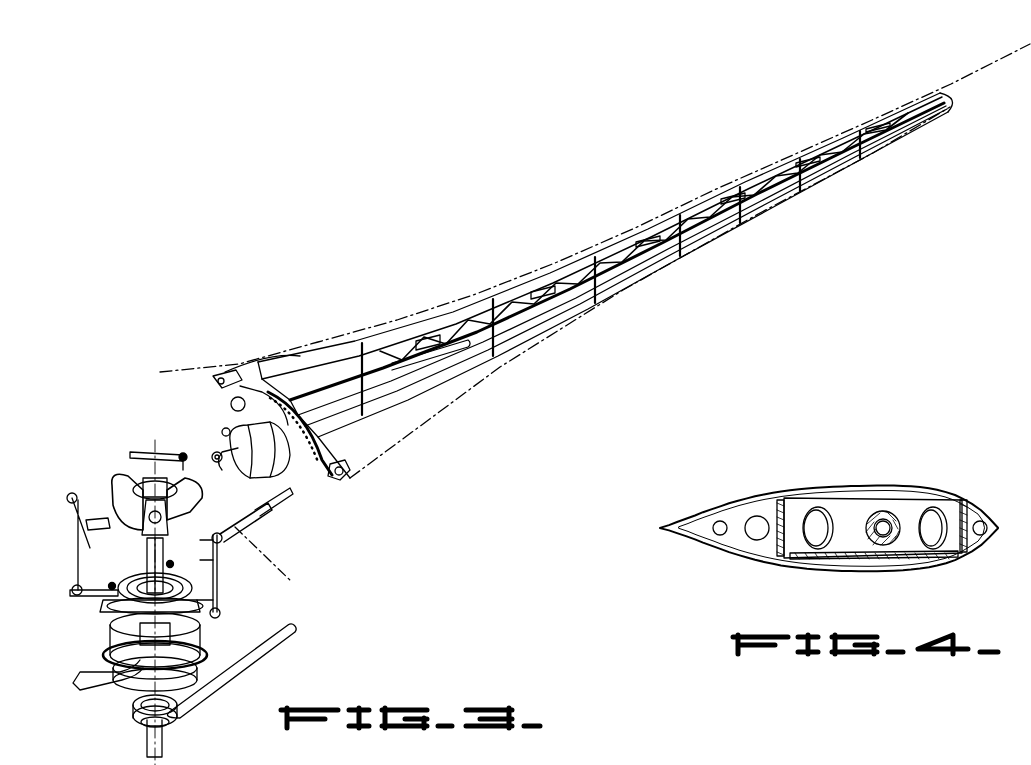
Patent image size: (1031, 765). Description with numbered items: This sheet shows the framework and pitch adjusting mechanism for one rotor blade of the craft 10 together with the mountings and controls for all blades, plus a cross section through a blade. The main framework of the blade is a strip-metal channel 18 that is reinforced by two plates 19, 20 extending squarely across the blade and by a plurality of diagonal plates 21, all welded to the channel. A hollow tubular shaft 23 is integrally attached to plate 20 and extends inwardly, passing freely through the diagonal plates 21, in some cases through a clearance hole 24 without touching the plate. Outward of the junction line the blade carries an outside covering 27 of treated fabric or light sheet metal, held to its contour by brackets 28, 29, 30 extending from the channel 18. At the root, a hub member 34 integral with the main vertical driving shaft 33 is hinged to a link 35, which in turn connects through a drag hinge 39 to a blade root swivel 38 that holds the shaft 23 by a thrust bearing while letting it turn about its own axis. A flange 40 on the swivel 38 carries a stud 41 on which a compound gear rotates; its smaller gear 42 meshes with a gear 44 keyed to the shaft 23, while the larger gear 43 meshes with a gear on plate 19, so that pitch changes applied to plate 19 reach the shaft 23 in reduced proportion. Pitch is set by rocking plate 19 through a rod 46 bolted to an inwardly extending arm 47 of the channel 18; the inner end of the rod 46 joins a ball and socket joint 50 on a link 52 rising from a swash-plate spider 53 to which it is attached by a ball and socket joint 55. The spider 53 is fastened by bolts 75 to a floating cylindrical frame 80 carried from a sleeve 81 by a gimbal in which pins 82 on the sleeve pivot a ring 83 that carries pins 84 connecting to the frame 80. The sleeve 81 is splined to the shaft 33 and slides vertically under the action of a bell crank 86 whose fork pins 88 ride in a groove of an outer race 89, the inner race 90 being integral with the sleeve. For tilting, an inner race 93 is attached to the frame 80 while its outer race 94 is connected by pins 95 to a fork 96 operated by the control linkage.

In FIG. 3, the rotor assembly 10 is at (160, 756).
In FIG. 3, the channel 18 is at (518, 298).
In FIG. 4, the channel 18 is at (905, 571).
In FIG. 3, the plate 19 is at (276, 415).
In FIG. 3, the plate 20 is at (756, 186).
In FIG. 3, the diagonal plates 21 is at (394, 354).
In FIG. 4, the diagonal plates 21 is at (930, 497).
In FIG. 3, the shaft 23 is at (408, 376).
In FIG. 4, the shaft 23 is at (875, 514).
In FIG. 4, the clearance hole 24 is at (886, 517).
In FIG. 4, the outside covering 27 is at (823, 496).
In FIG. 3, the bracket 28 is at (236, 371).
In FIG. 4, the bracket 28 is at (748, 548).
In FIG. 4, the bracket 29 is at (851, 568).
In FIG. 3, the bracket 30 is at (352, 472).
In FIG. 4, the bracket 30 is at (985, 515).
In FIG. 3, the main vertical driving shaft 33 is at (165, 748).
In FIG. 3, the hub member 34 is at (118, 495).
In FIG. 3, the link 35 is at (115, 478).
In FIG. 3, the blade root swivel 38 is at (240, 458).
In FIG. 3, the drag hinge 39 is at (212, 457).
In FIG. 3, the flange 40 is at (256, 477).
In FIG. 3, the stud 41 is at (222, 431).
In FIG. 3, the smaller gear 42 is at (231, 404).
In FIG. 3, the larger gear 43 is at (240, 390).
In FIG. 3, the gear 44 is at (283, 419).
In FIG. 3, the rod 46 is at (142, 452).
In FIG. 3, the arm 47 is at (255, 515).
In FIG. 3, the ball and socket joint 50 is at (180, 455).
In FIG. 3, the link 52 is at (76, 545).
In FIG. 3, the swash-plate spider 53 is at (75, 598).
In FIG. 3, the ball and socket joint 55 is at (72, 590).
In FIG. 3, the bolts 75 is at (992, 93).
In FIG. 3, the floating cylindrical frame 80 is at (105, 608).
In FIG. 3, the sleeve 81 is at (140, 708).
In FIG. 3, the pins 82 is at (214, 600).
In FIG. 3, the ring 83 is at (140, 575).
In FIG. 3, the pins 84 is at (218, 574).
In FIG. 3, the bell crank 86 is at (286, 632).
In FIG. 3, the pins 88 is at (177, 718).
In FIG. 3, the outer race 89 is at (135, 722).
In FIG. 3, the inner race 90 is at (150, 728).
In FIG. 3, the inner race 93 is at (135, 682).
In FIG. 3, the outer race 94 is at (110, 640).
In FIG. 3, the pins 95 is at (207, 655).
In FIG. 3, the fork 96 is at (88, 672).